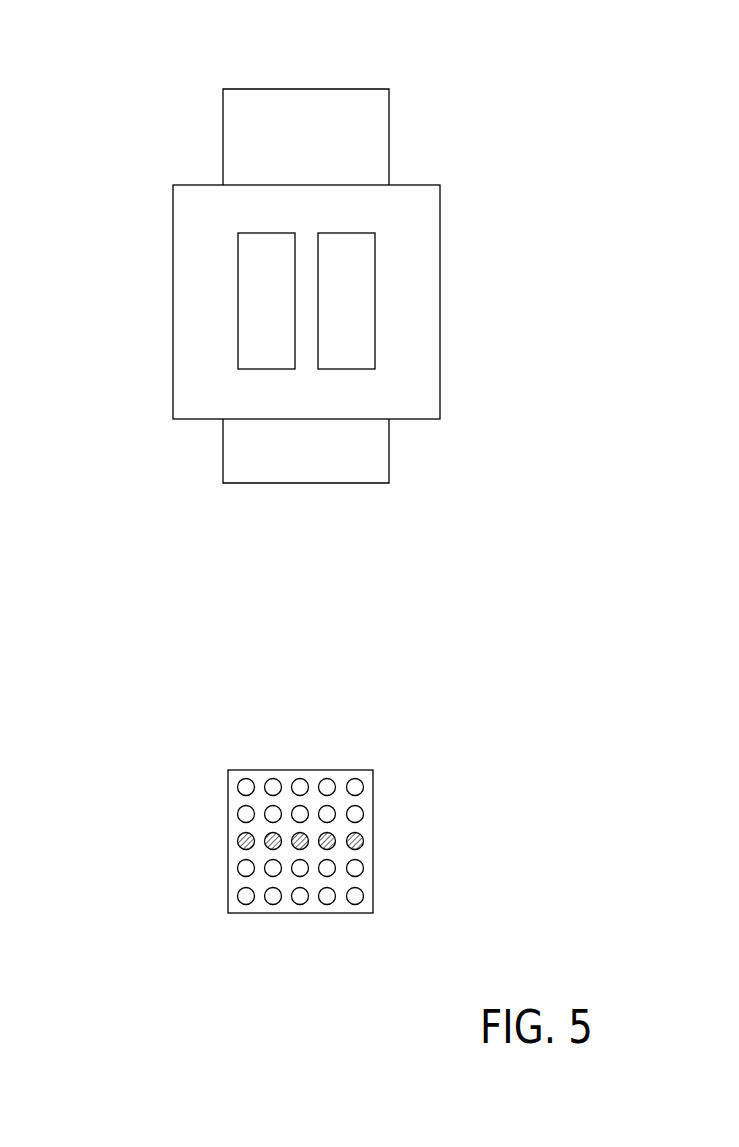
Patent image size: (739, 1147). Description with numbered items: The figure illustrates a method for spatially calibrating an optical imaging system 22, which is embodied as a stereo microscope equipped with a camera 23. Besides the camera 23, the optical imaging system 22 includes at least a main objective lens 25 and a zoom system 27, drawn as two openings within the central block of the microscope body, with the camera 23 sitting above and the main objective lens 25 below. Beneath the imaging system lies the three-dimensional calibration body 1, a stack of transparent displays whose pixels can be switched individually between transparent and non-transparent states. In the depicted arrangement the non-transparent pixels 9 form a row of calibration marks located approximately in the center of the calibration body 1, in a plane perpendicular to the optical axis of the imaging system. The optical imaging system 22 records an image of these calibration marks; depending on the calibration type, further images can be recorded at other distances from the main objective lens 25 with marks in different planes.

The optical imaging system 22 is at (115, 73).
The zoom system 27 is at (308, 222).
The camera 23 is at (373, 130).
The main objective lens 25 is at (378, 454).
The 3D calibration body 1 is at (370, 800).
The pixels in non-transparent state 9 is at (367, 832).